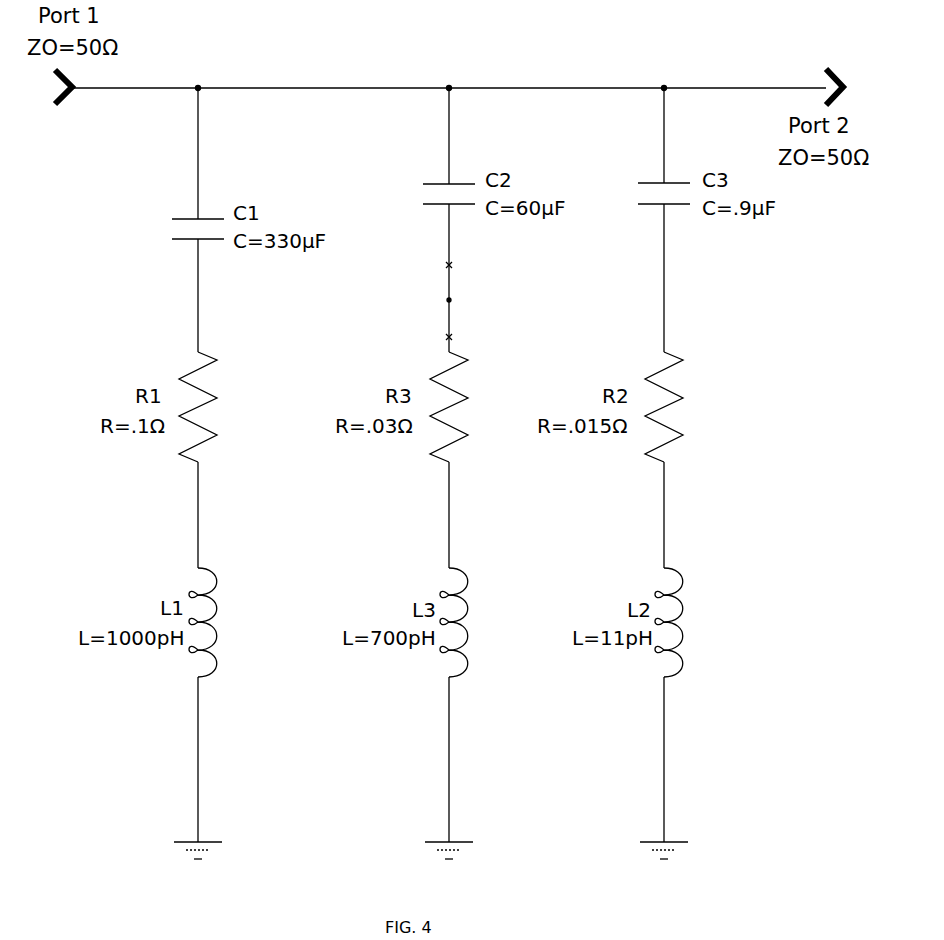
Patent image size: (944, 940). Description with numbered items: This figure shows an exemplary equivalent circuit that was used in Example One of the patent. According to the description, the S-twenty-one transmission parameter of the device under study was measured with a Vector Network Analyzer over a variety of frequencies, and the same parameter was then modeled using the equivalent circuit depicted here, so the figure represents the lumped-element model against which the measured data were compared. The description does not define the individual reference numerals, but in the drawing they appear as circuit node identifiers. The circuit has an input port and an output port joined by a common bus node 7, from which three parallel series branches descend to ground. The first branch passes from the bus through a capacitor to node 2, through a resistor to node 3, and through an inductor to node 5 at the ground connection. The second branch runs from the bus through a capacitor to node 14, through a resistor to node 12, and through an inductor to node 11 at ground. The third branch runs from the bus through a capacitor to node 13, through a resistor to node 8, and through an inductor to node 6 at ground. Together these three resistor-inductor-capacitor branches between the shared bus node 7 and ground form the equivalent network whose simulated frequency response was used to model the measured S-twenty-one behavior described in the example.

The input/output bus node between Port 1 and Port 2 7 is at (449, 153).
The node between capacitor C1 and resistor R1 2 is at (205, 295).
The node between resistor R1 and inductor L1 3 is at (205, 515).
The node between inductor L1 and ground 5 is at (198, 768).
The node between capacitor C2 and resistor R3 14 is at (459, 278).
The node between resistor R3 and inductor L3 12 is at (462, 515).
The node between inductor L3 and ground 11 is at (449, 768).
The node between capacitor C3 and resistor R2 13 is at (676, 278).
The node between resistor R2 and inductor L2 8 is at (672, 515).
The node between inductor L2 and ground 6 is at (664, 768).